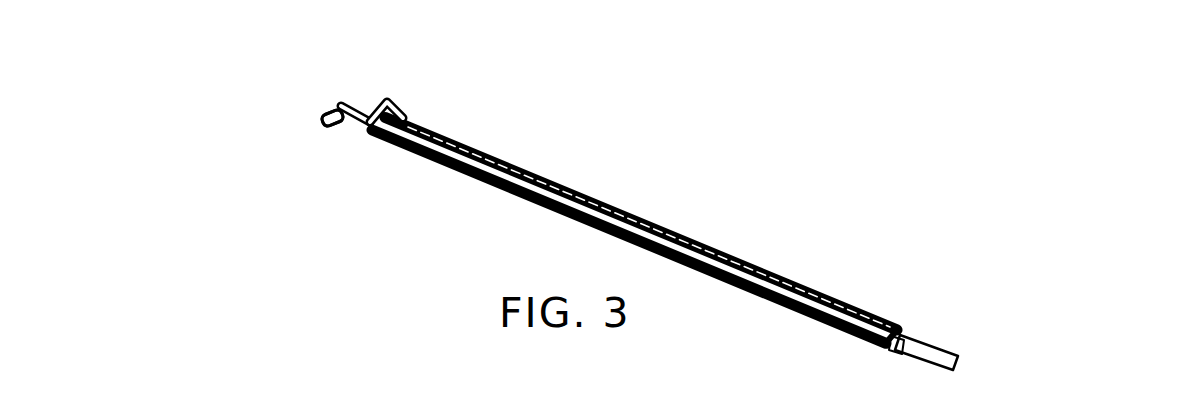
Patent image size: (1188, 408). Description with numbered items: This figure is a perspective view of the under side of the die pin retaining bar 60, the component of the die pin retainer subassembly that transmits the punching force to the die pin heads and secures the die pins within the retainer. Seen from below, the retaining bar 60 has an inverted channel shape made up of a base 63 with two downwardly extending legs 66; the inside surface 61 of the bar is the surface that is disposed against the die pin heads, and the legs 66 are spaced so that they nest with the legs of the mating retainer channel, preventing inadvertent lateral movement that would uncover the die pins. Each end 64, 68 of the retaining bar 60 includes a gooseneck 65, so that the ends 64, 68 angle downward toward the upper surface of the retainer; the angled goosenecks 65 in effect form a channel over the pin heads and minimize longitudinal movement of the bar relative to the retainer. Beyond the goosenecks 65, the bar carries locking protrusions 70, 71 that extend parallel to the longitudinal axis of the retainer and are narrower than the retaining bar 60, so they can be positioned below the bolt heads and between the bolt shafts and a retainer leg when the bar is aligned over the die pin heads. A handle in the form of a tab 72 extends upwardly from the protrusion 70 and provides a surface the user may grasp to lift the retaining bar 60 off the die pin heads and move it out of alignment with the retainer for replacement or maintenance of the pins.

The die pin retaining bar 60 is at (848, 258).
The inside surface 61 is at (898, 332).
The base 63 is at (677, 236).
The end 64 is at (310, 124).
The goosenecks 65 is at (388, 103).
The legs 66 is at (580, 196).
The end 68 is at (980, 353).
The protrusion 70 is at (362, 102).
The protrusion 71 is at (942, 348).
The tab 72 is at (329, 129).